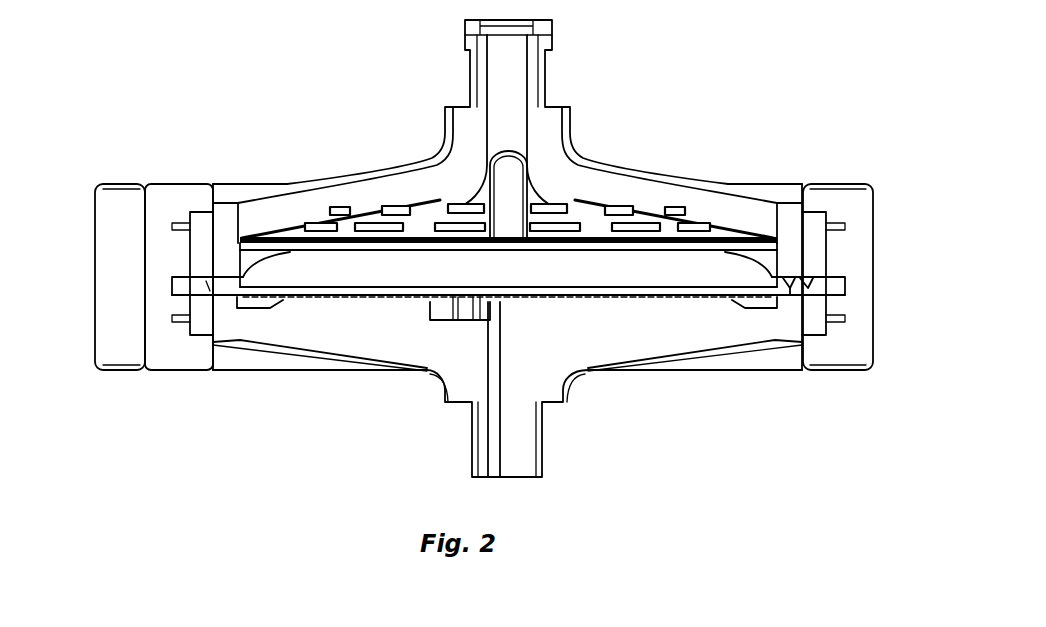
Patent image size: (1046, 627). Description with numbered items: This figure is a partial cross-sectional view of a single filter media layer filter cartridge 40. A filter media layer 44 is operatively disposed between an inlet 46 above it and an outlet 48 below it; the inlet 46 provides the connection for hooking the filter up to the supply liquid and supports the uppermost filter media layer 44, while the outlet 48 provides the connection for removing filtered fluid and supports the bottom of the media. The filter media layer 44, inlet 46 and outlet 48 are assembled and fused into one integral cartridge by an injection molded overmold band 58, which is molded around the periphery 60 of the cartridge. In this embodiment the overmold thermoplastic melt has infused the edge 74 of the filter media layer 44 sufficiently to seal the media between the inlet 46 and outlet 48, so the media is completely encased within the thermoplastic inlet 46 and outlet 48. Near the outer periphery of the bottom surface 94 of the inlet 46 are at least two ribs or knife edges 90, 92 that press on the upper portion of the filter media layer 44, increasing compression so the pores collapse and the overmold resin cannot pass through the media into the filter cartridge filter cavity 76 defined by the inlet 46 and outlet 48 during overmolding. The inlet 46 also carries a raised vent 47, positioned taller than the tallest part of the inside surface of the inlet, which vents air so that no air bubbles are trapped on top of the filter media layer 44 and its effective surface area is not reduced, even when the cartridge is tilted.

The single filter media layer filter cartridge 40 is at (698, 73).
The filter media layer 44 is at (713, 268).
The inlet 46 is at (585, 188).
The raised vent 47 is at (452, 208).
The outlet 48 is at (540, 343).
The overmold band 58 is at (845, 351).
The periphery 60 is at (172, 287).
The edge 74 is at (840, 287).
The filter cartridge filter cavity 76 is at (641, 277).
The rib/knife edge 90 is at (810, 275).
The rib/knife edge 92 is at (783, 375).
The bottom surface 94 is at (782, 395).